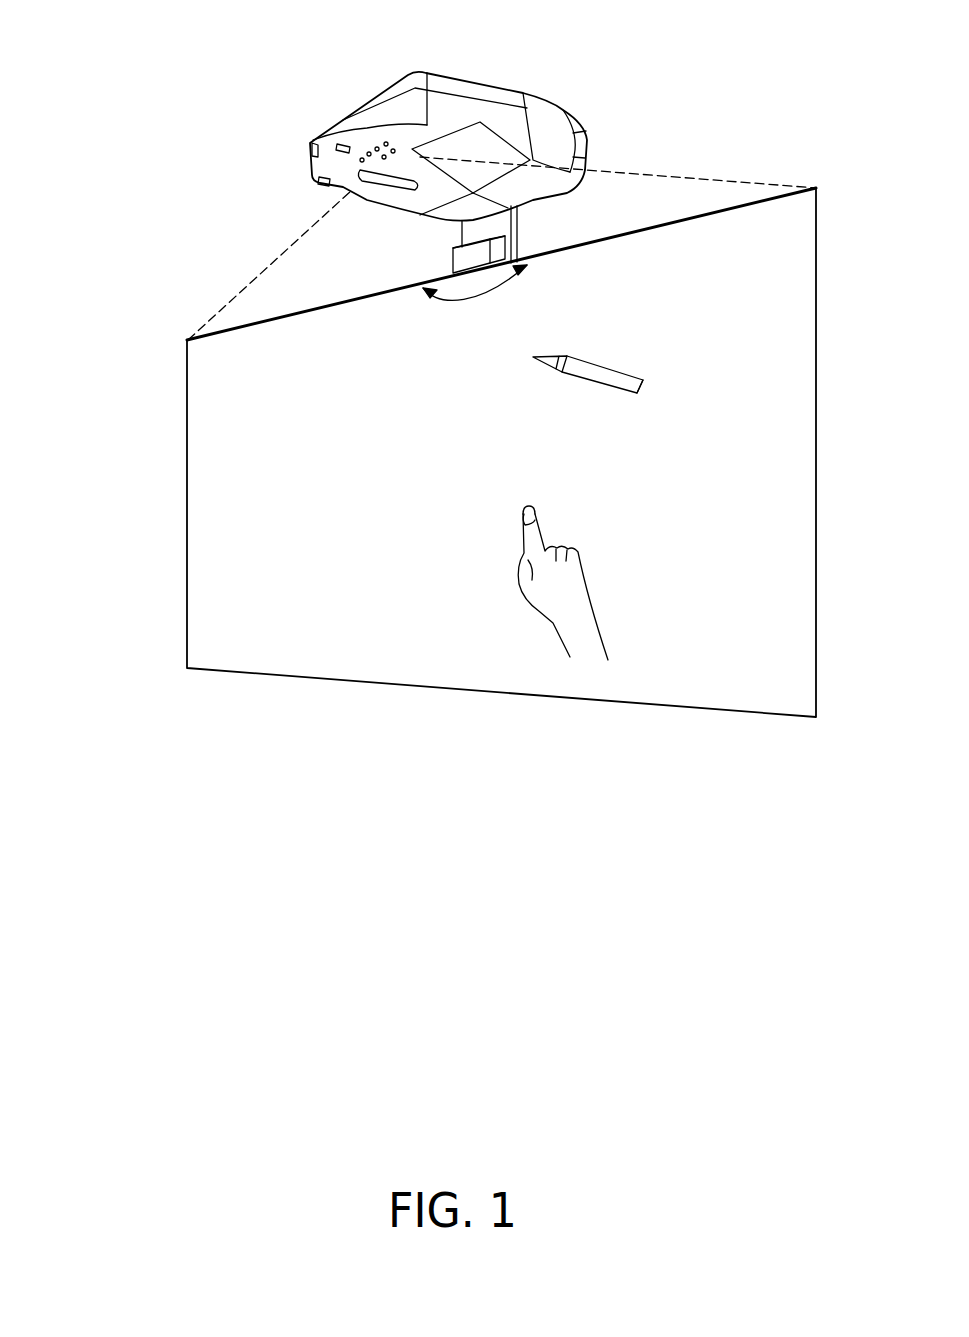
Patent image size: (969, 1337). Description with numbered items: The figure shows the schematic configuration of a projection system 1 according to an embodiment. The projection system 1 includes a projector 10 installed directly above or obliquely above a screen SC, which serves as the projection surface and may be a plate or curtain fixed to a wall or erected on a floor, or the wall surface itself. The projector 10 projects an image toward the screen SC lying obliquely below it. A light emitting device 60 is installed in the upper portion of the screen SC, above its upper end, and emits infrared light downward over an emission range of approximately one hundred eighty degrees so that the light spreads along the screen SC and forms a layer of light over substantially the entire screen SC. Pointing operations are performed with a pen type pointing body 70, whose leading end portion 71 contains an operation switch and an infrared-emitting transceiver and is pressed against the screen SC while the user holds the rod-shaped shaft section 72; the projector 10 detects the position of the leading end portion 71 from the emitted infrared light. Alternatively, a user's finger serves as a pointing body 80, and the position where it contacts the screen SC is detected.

The projection system 1 is at (232, 107).
The projector 10 is at (483, 83).
The light emitting device 60 is at (452, 262).
The pointing body 70 is at (583, 373).
The leading end portion 71 is at (543, 352).
The shaft section 72 is at (623, 394).
The pointing body 80 is at (558, 633).
The screen SC is at (187, 478).